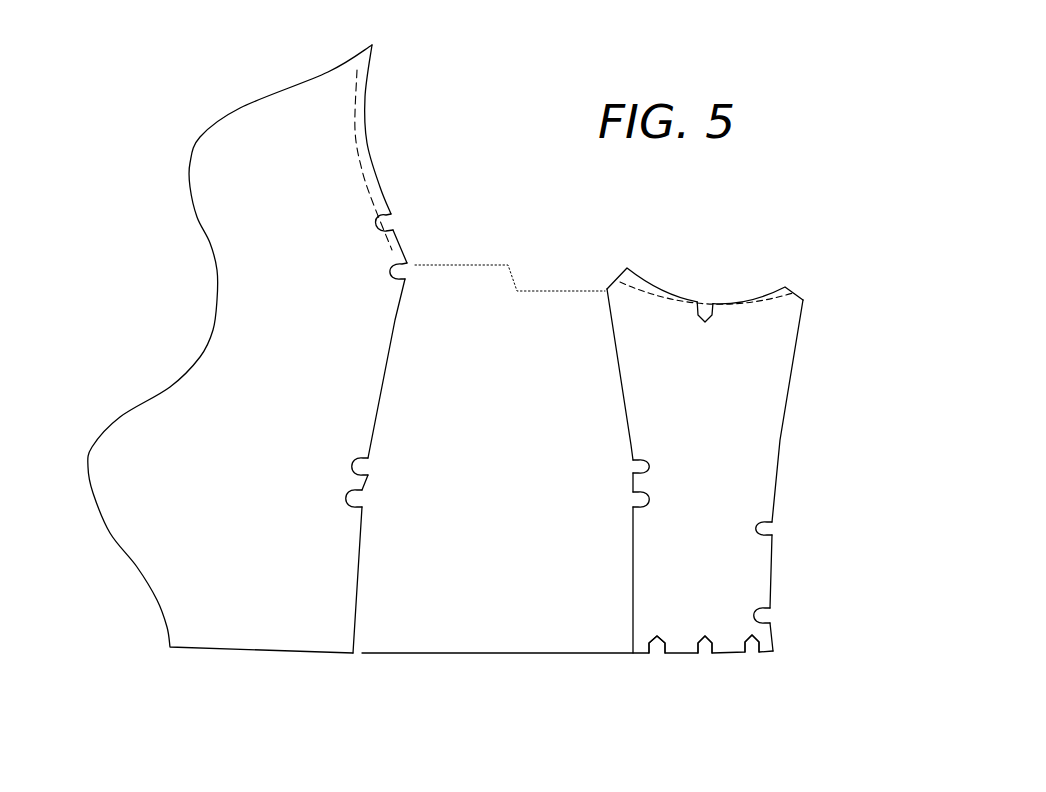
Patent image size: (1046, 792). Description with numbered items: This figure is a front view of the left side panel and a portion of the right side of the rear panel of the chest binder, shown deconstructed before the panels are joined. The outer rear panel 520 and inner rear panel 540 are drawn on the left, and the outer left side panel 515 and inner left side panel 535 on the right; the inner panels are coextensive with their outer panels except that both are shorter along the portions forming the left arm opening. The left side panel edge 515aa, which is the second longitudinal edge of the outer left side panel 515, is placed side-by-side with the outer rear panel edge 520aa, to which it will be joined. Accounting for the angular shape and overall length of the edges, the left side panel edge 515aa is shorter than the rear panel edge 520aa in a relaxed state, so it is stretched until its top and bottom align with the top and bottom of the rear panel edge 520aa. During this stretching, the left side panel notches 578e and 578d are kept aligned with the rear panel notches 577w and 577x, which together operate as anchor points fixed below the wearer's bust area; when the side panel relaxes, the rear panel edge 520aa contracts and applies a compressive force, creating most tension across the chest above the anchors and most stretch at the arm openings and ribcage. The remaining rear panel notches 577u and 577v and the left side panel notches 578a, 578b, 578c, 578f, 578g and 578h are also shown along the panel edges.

The outer left side panel 515 is at (658, 292).
The left side panel edge 515aa is at (626, 413).
The outer rear panel 520 is at (364, 146).
The outer rear panel edge 520aa is at (385, 368).
The inner left side panel 535 is at (755, 402).
The inner rear panel 540 is at (160, 410).
The inner and outer panel notch 577u is at (393, 218).
The inner and outer panel notch 577v is at (405, 273).
The inner and outer panel notch 577w is at (368, 468).
The inner and outer panel notch 577x is at (365, 500).
The left side panel notch 578a is at (752, 657).
The left side panel notch 578b is at (705, 657).
The left side panel notch 578c is at (657, 657).
The left side panel notch 578d is at (632, 500).
The left side panel notch 578e is at (631, 468).
The left side panel notch 578f is at (707, 300).
The left side panel notch 578g is at (775, 528).
The left side panel notch 578h is at (775, 613).